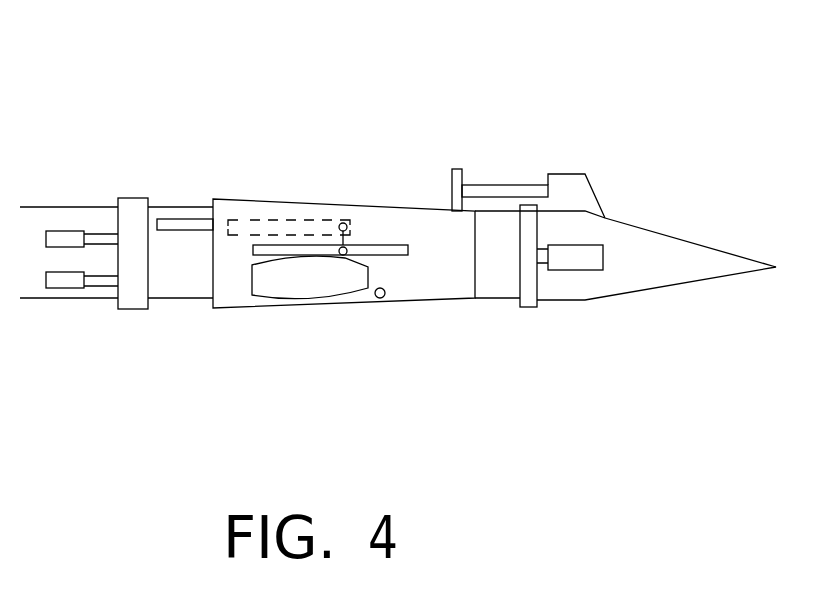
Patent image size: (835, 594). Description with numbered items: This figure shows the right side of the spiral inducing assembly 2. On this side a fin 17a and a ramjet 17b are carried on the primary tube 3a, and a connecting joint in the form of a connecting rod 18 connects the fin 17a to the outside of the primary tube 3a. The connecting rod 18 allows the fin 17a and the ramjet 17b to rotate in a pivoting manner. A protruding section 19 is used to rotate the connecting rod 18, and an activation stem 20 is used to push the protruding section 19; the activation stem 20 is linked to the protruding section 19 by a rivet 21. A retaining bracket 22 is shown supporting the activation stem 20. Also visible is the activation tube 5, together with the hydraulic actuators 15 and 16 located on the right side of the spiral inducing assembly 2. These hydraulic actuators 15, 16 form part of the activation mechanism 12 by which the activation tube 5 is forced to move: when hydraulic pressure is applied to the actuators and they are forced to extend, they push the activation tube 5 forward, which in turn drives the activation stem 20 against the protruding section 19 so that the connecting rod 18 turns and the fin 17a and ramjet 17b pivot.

The spiral inducing assembly 2 is at (313, 322).
The primary tube 3a is at (433, 285).
The activation tube 5 is at (135, 203).
The activation mechanism 12 is at (93, 293).
The hydraulic actuator 15 is at (70, 238).
The hydraulic actuator 16 is at (63, 284).
The fin 17a is at (400, 247).
The ramjet 17b is at (333, 287).
The connecting rod 18 is at (343, 251).
The protruding section 19 is at (348, 237).
The activation stem 20 is at (190, 223).
The rivet 21 is at (343, 222).
The retaining bracket 22 is at (250, 210).